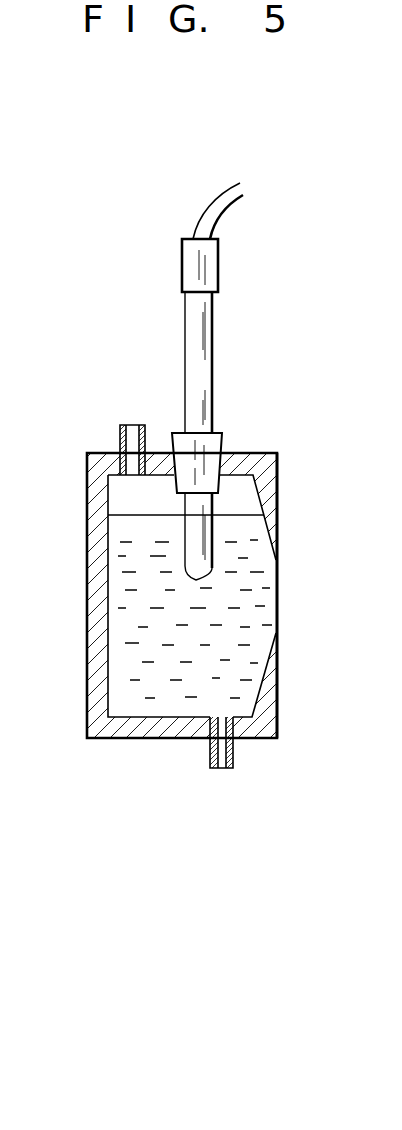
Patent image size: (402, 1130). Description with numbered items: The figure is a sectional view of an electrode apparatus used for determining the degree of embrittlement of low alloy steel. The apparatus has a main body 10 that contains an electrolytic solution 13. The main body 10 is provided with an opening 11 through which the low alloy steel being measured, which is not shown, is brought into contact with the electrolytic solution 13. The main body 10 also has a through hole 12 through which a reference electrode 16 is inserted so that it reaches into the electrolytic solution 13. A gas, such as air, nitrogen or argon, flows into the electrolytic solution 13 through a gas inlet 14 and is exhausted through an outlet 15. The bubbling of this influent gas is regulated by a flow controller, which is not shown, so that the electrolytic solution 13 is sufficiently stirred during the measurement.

The main body 10 is at (88, 696).
The opening 11 is at (282, 598).
The through hole 12 is at (228, 460).
The electrolytic solution 13 is at (114, 612).
The gas inlet 14 is at (235, 755).
The outlet 15 is at (125, 428).
The reference electrode 16 is at (213, 348).